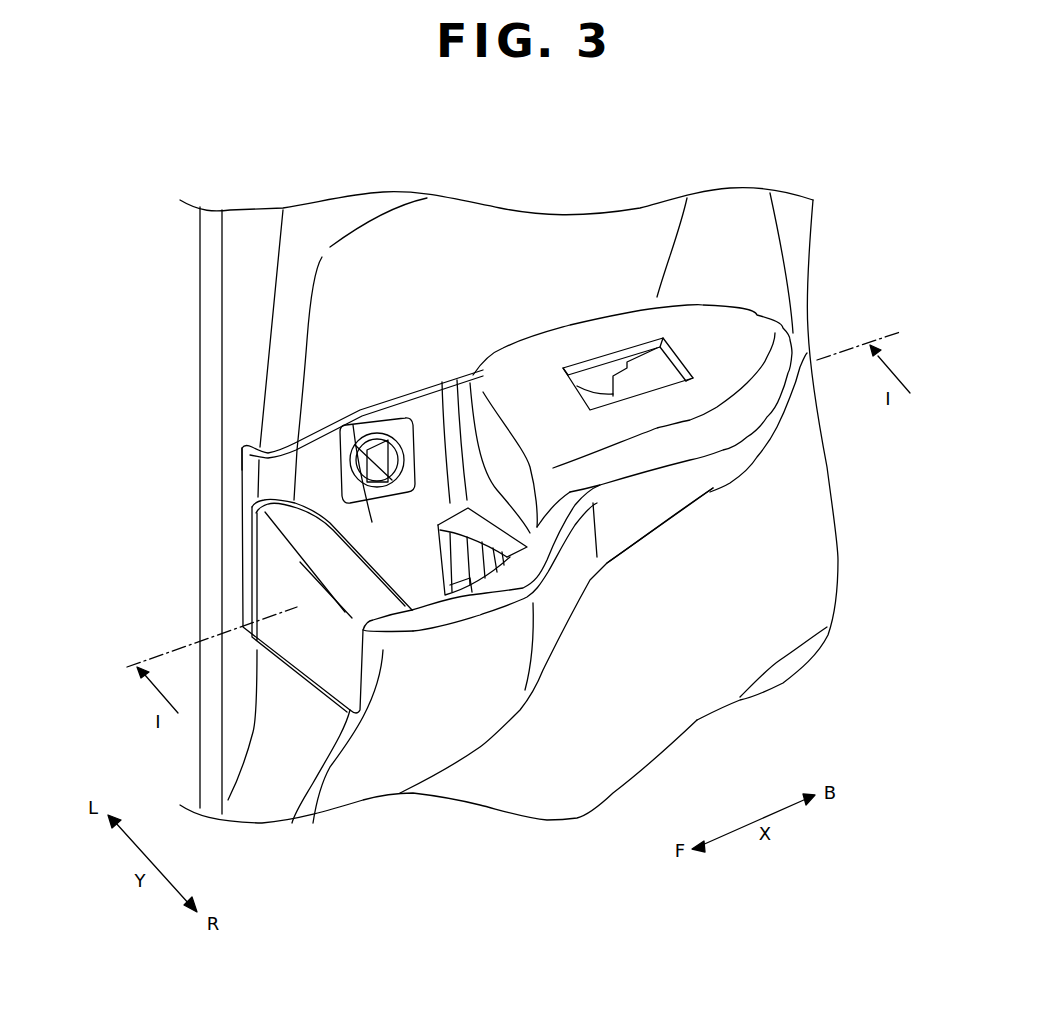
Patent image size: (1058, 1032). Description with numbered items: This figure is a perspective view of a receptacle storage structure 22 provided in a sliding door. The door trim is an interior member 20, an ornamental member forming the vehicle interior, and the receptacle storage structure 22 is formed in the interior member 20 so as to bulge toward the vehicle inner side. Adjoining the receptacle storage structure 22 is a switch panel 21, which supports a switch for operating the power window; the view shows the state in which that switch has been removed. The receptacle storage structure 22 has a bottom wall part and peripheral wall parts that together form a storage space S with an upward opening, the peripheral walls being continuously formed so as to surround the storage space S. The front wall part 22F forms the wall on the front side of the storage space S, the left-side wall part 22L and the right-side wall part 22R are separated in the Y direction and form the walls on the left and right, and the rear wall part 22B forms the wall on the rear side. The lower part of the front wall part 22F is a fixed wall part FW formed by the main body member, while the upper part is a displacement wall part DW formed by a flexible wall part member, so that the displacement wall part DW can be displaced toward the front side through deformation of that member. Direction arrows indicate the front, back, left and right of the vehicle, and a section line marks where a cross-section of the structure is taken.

The interior member 20 is at (240, 242).
The switch panel 21 is at (717, 327).
The receptacle storage structure 22 is at (498, 724).
The right-side wall part 22R is at (353, 425).
The rear wall part 22B is at (458, 497).
The front wall part 22F is at (287, 720).
The left-side wall part 22L is at (542, 615).
The storage space S is at (341, 519).
The displacement wall part DW is at (273, 577).
The fixed wall part FW is at (320, 727).